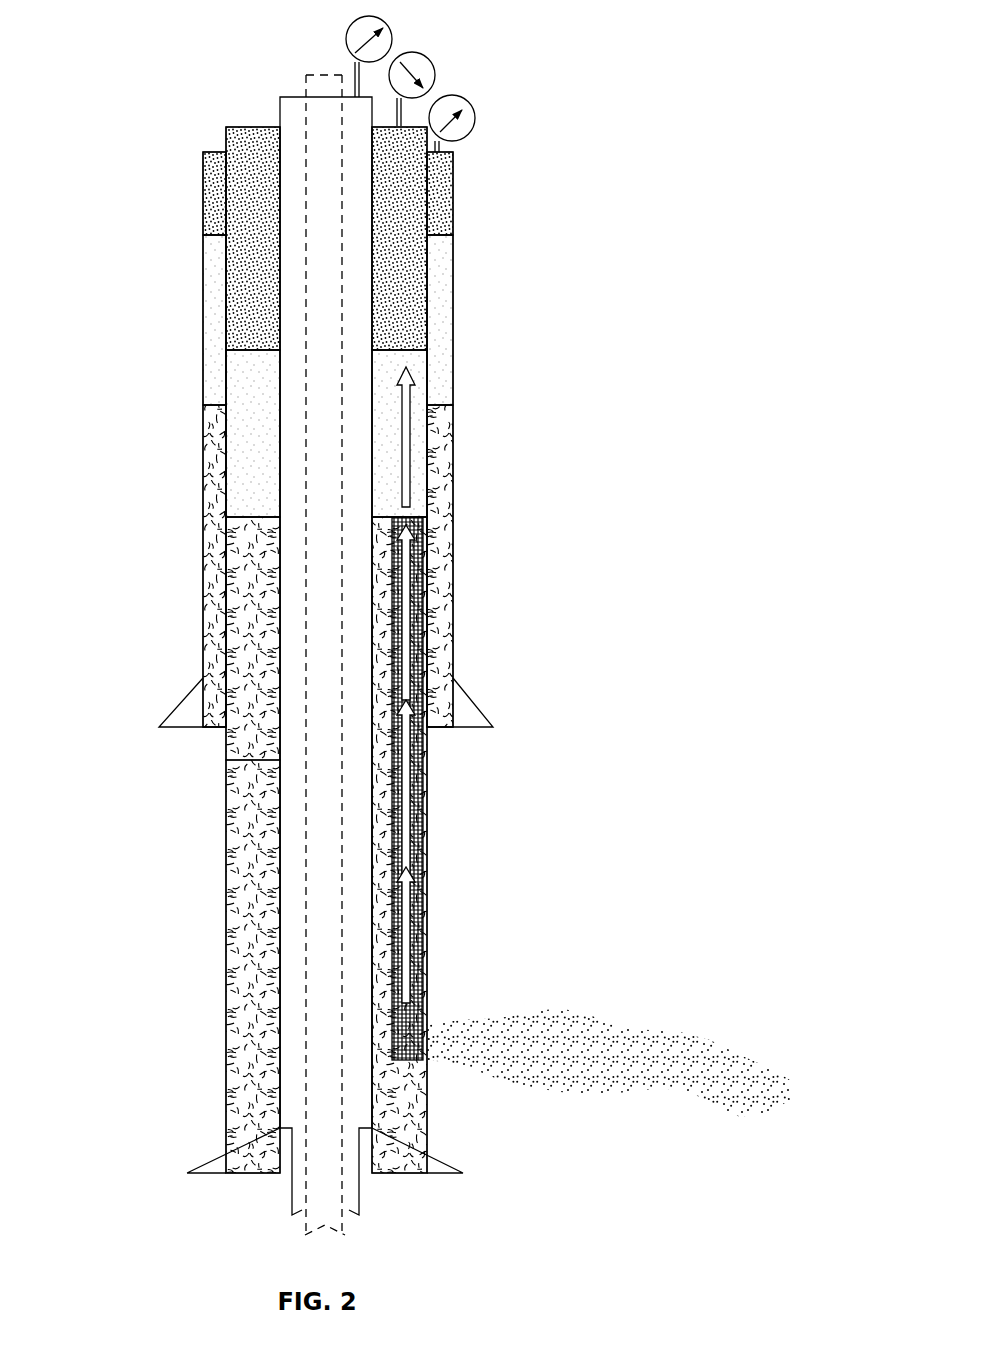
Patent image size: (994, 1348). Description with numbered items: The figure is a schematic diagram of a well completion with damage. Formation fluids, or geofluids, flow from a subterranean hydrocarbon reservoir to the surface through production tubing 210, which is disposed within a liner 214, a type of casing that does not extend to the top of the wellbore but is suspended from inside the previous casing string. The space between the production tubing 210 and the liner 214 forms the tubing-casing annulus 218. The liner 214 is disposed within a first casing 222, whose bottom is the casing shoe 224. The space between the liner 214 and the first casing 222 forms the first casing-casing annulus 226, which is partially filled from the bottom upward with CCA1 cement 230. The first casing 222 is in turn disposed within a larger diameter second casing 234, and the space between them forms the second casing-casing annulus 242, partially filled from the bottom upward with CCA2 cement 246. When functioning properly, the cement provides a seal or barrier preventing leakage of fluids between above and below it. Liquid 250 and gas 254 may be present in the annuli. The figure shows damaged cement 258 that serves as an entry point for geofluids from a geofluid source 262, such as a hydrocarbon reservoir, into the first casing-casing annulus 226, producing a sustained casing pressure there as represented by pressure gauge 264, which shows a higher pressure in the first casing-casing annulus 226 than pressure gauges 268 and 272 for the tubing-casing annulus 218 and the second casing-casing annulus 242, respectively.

The production tubing 210 is at (303, 87).
The liner 214 is at (292, 1192).
The tubing-casing annulus 218 is at (390, 23).
The first casing 222 is at (273, 863).
The casing shoe 224 is at (400, 1175).
The first casing-casing annulus 226 is at (403, 173).
The CCA1 cement 230 is at (253, 663).
The second casing 234 is at (205, 588).
The second casing-casing annulus 242 is at (433, 200).
The CCA2 cement 246 is at (448, 480).
The liquid 250 is at (252, 432).
The gas 254 is at (242, 205).
The damaged cement 258 is at (427, 1028).
The geofluid source 262 is at (547, 1058).
The pressure gauge 264 is at (430, 55).
The pressure gauge 268 is at (358, 107).
The pressure gauge 272 is at (472, 100).